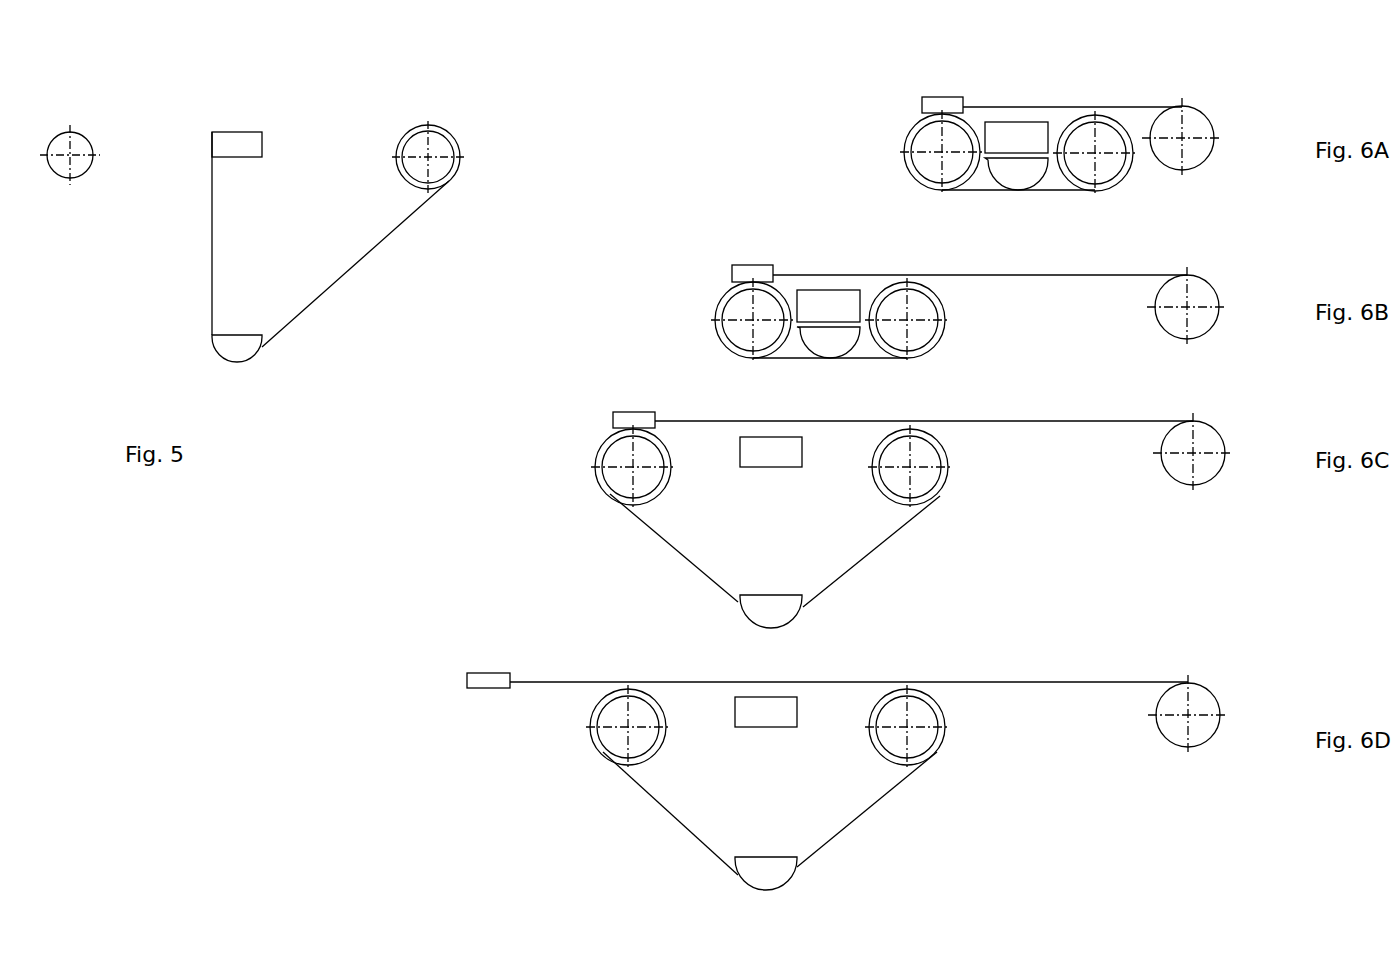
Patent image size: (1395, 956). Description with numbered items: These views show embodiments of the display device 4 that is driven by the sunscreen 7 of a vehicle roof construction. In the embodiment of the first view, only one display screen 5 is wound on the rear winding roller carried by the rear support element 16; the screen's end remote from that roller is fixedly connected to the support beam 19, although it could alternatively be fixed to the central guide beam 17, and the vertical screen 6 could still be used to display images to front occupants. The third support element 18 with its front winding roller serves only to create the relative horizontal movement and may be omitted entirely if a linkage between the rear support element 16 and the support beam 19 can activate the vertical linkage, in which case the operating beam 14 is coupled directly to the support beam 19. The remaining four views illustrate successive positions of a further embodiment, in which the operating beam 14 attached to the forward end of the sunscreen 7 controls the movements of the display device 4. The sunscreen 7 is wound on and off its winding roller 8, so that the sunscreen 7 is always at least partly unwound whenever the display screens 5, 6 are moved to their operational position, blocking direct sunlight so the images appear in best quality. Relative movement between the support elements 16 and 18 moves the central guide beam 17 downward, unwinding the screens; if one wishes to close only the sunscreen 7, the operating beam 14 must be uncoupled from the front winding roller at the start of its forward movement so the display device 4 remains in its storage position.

In FIG. 5, the display device 4 is at (358, 123).
In FIG. 6A, the display device 4 is at (1085, 87).
In FIG. 5, the display screen 5 is at (382, 237).
In FIG. 6C, the display screen 5 is at (885, 545).
In FIG. 6D, the display screen 5 is at (867, 815).
In FIG. 5, the display screen 6 is at (208, 250).
In FIG. 6C, the display screen 6 is at (655, 543).
In FIG. 6D, the display screen 6 is at (655, 807).
In FIG. 6A, the sunscreen 7 is at (1147, 105).
In FIG. 6B, the sunscreen 7 is at (1118, 272).
In FIG. 6C, the sunscreen 7 is at (1073, 421).
In FIG. 6D, the sunscreen 7 is at (1032, 680).
In FIG. 6A, the winding roller 8 is at (1197, 125).
In FIG. 6B, the winding roller 8 is at (1200, 298).
In FIG. 6C, the winding roller 8 is at (1207, 445).
In FIG. 6D, the winding roller 8 is at (1195, 703).
In FIG. 6A, the operating beam 14 is at (937, 105).
In FIG. 6B, the operating beam 14 is at (757, 265).
In FIG. 6C, the operating beam 14 is at (630, 420).
In FIG. 6D, the operating beam 14 is at (490, 680).
In FIG. 5, the rear support element 16 is at (433, 150).
In FIG. 6A, the rear support element 16 is at (1085, 138).
In FIG. 6B, the rear support element 16 is at (920, 312).
In FIG. 6C, the rear support element 16 is at (920, 458).
In FIG. 6D, the rear support element 16 is at (917, 713).
In FIG. 5, the central guide beam 17 is at (242, 343).
In FIG. 6A, the central guide beam 17 is at (1013, 175).
In FIG. 6B, the central guide beam 17 is at (835, 343).
In FIG. 6C, the central guide beam 17 is at (775, 612).
In FIG. 6D, the central guide beam 17 is at (783, 868).
In FIG. 5, the third support element 18 is at (78, 147).
In FIG. 6A, the third support element 18 is at (923, 140).
In FIG. 6B, the third support element 18 is at (737, 305).
In FIG. 6C, the third support element 18 is at (617, 460).
In FIG. 6D, the third support element 18 is at (620, 717).
In FIG. 5, the support beam 19 is at (240, 147).
In FIG. 6A, the support beam 19 is at (998, 138).
In FIG. 6B, the support beam 19 is at (818, 302).
In FIG. 6C, the support beam 19 is at (758, 448).
In FIG. 6D, the support beam 19 is at (758, 707).